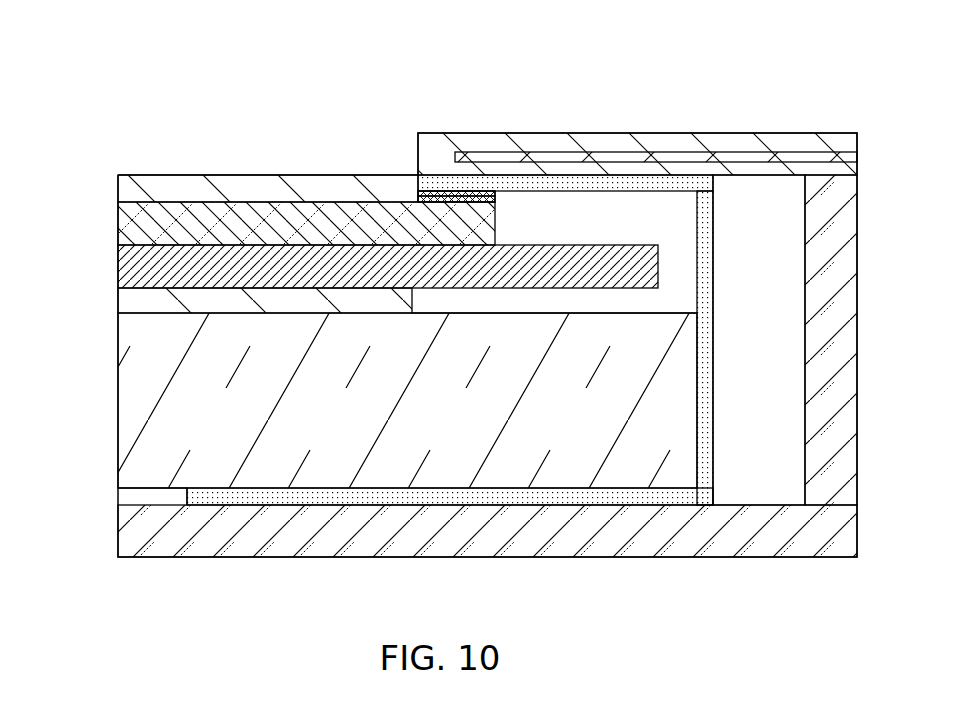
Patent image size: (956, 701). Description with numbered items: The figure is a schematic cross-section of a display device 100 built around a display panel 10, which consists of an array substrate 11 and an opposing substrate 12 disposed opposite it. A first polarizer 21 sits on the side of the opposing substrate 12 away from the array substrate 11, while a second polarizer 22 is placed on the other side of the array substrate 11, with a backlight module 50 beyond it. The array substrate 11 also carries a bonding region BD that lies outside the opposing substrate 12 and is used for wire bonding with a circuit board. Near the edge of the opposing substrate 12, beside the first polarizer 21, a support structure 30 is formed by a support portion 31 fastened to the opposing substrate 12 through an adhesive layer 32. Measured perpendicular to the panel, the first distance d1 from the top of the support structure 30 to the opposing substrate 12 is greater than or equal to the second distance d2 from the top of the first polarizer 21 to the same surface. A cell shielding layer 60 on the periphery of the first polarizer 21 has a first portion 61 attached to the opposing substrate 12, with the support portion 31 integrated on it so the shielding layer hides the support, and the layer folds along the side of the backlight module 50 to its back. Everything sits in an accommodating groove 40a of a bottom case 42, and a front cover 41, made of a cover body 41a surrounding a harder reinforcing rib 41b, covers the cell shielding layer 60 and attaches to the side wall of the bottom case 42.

The display device 100 is at (160, 89).
The display panel 10 is at (334, 245).
The array substrate 11 is at (160, 268).
The opposing substrate 12 is at (157, 226).
The first polarizer 21 is at (162, 186).
The second polarizer 22 is at (160, 296).
The support structure 30 is at (491, 121).
The support portion 31 is at (498, 190).
The adhesive layer 32 is at (484, 196).
The front cover 41 is at (637, 274).
The cover body 41a is at (760, 145).
The reinforcing rib 41b is at (814, 294).
The bottom case 42 is at (160, 535).
The accommodating groove 40a is at (758, 477).
The backlight module 50 is at (160, 451).
The cell shielding layer 60 is at (712, 296).
The first portion 61 is at (460, 190).
The bonding region BD is at (618, 267).
The first distance d1 is at (443, 227).
The second distance d2 is at (302, 227).